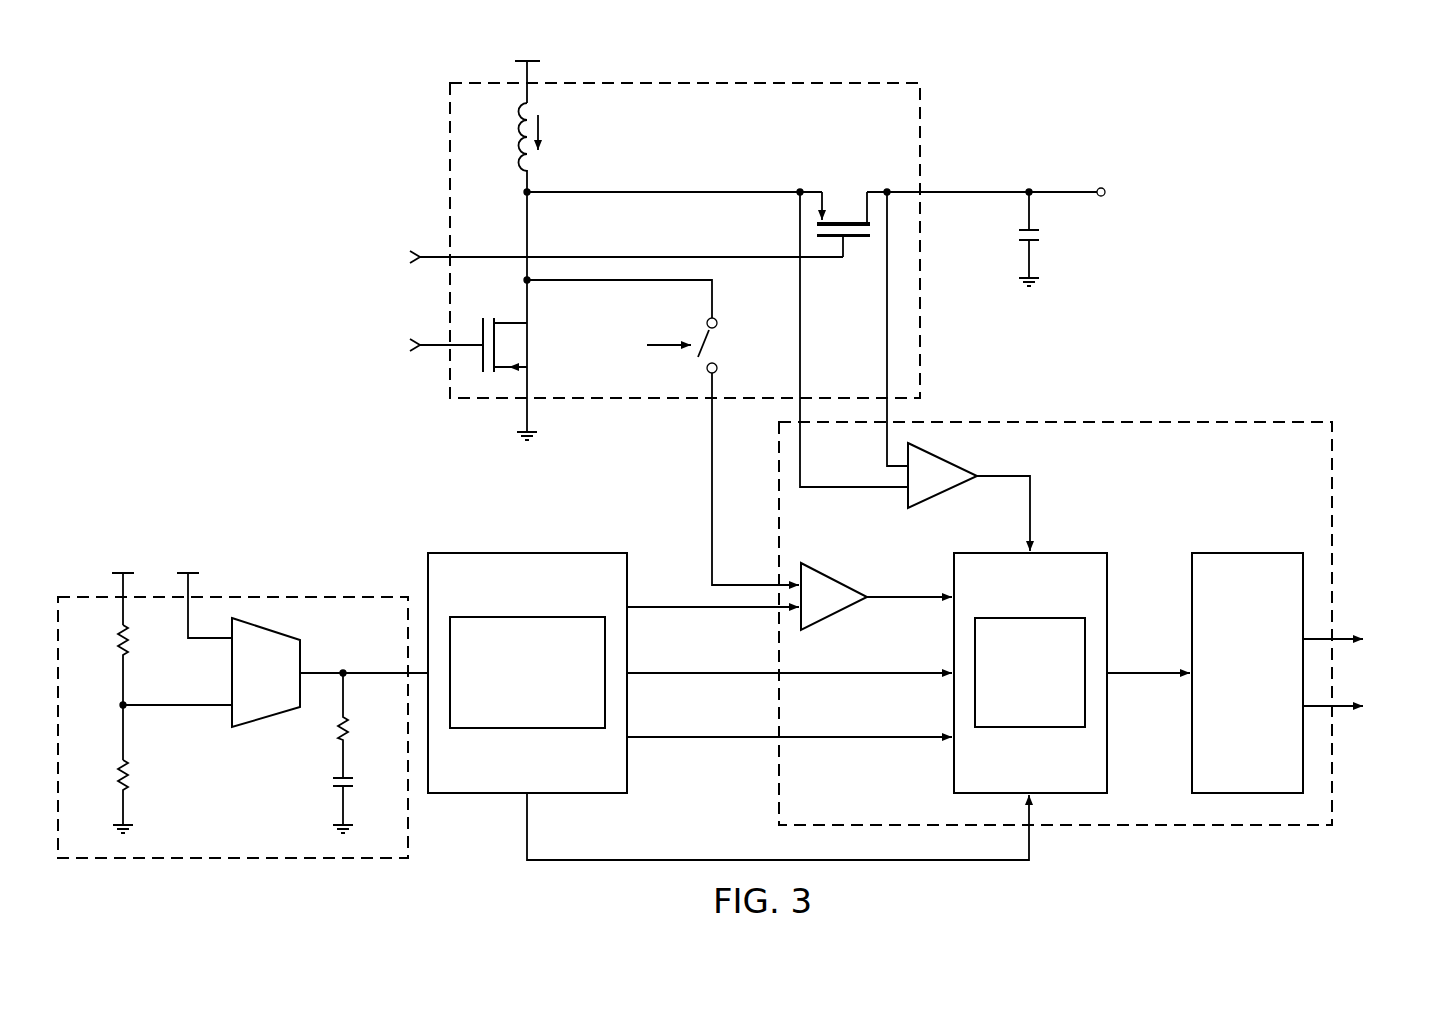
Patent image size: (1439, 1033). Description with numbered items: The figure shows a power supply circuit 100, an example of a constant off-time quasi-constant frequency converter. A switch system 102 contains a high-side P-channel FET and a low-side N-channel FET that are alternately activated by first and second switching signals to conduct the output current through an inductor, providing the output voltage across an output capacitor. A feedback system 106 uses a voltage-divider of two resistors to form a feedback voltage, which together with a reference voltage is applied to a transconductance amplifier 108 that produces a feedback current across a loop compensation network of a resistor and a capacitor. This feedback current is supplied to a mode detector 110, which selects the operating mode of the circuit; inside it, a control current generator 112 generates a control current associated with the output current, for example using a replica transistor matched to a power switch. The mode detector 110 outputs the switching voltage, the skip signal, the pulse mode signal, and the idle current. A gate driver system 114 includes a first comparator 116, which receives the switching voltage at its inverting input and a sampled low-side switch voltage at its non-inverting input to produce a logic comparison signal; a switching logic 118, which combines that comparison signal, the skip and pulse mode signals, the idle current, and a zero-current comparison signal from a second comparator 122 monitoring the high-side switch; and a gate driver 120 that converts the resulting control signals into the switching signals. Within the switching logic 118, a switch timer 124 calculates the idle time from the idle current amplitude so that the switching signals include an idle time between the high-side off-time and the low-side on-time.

The power supply circuit 100 is at (178, 122).
The switch system 102 is at (657, 75).
The feedback system 106 is at (252, 826).
The transconductance amplifier 108 is at (268, 730).
The mode detector 110 is at (505, 797).
The control current generator 112 is at (527, 732).
The gate driver system 114 is at (1152, 420).
The first comparator 116 is at (833, 615).
The switching logic 118 is at (1050, 548).
The gate driver 120 is at (1266, 716).
The second comparator 122 is at (945, 497).
The switch timer 124 is at (1028, 730).